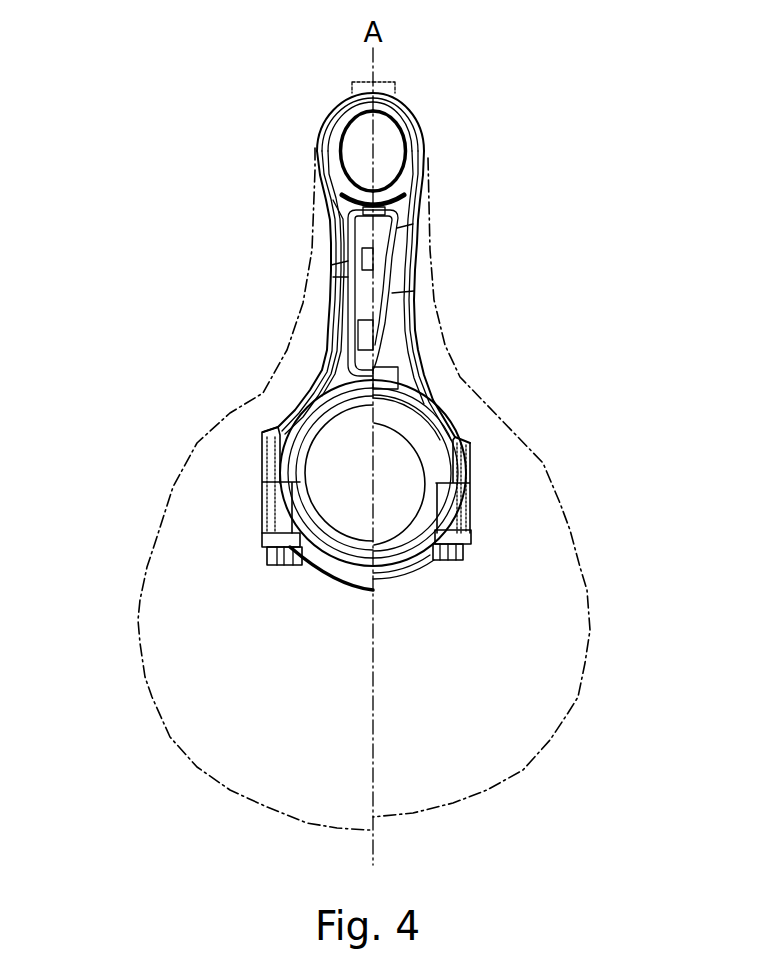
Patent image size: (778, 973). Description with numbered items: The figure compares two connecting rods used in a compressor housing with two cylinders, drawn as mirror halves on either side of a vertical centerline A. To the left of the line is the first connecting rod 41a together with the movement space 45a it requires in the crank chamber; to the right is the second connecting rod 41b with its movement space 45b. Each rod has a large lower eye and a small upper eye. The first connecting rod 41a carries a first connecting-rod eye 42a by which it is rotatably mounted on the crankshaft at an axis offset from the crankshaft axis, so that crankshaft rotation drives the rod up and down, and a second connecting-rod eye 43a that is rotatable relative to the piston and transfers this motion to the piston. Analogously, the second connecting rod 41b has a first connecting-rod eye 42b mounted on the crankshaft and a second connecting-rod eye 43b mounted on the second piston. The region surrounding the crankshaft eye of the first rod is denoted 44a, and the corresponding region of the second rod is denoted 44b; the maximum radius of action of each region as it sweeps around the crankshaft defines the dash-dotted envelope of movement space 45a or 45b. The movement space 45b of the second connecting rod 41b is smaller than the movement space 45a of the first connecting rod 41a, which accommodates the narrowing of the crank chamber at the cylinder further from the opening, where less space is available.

The first connecting rod 41a is at (330, 243).
The second connecting rod 41b is at (416, 287).
The first connecting-rod eye 42a is at (346, 456).
The first connecting-rod eye 42b is at (414, 466).
The second connecting-rod eye 43a is at (357, 153).
The second connecting-rod eye 43b is at (386, 151).
The region surrounded by the first connecting-rod eye 44a is at (255, 548).
The region surrounding the connecting-rod eye 44b is at (478, 521).
The movement space 45a is at (149, 697).
The movement space 45b is at (580, 697).